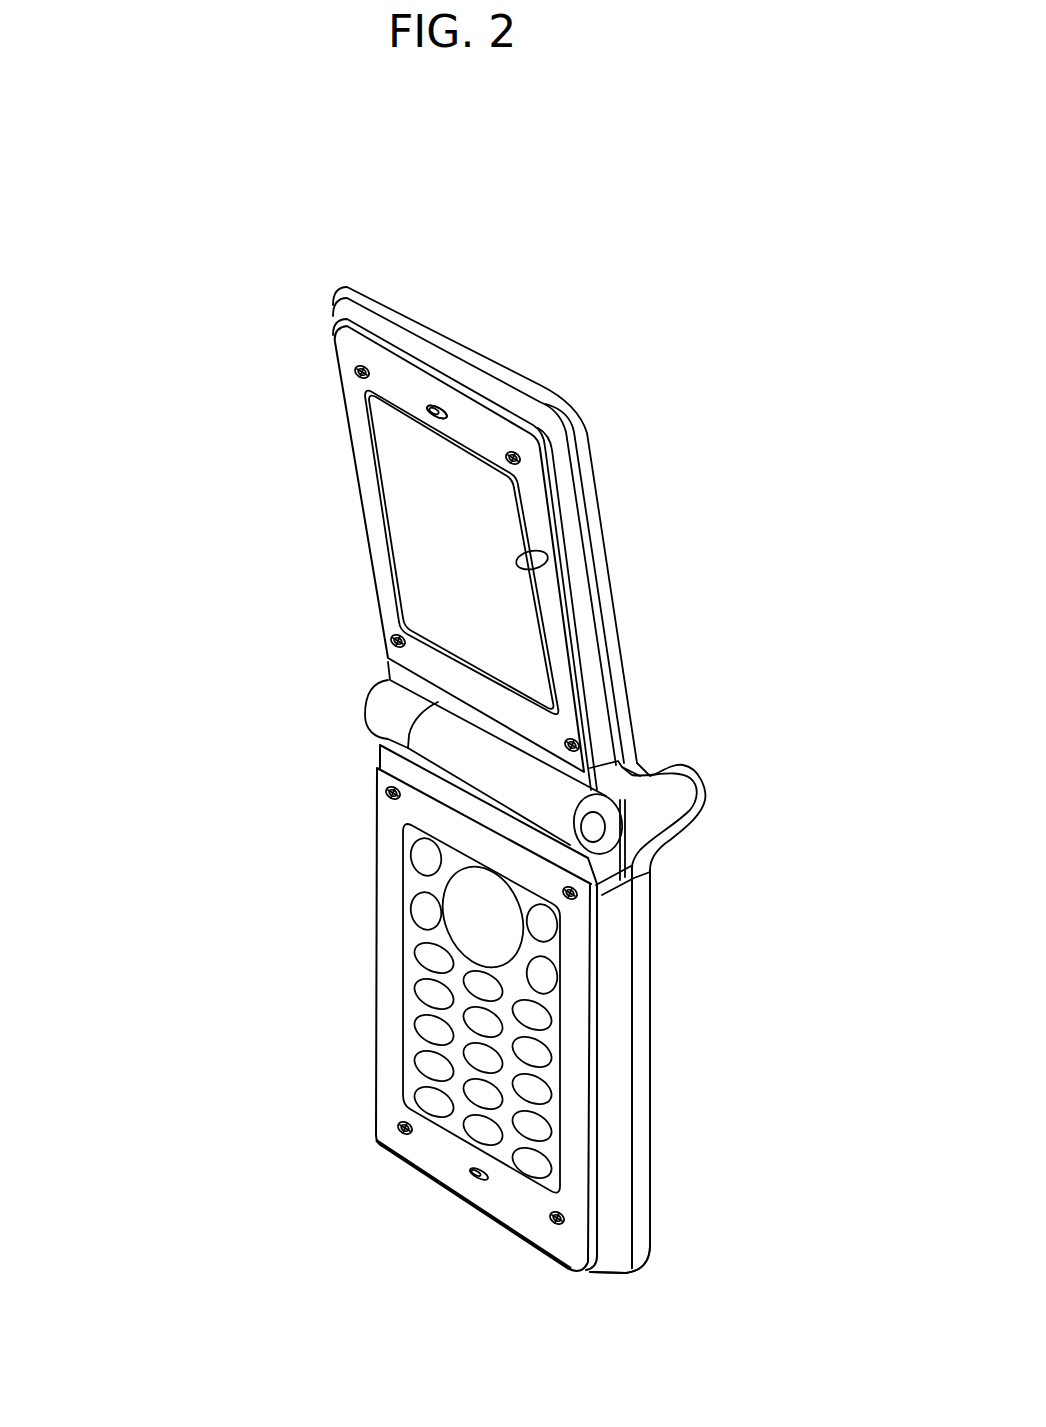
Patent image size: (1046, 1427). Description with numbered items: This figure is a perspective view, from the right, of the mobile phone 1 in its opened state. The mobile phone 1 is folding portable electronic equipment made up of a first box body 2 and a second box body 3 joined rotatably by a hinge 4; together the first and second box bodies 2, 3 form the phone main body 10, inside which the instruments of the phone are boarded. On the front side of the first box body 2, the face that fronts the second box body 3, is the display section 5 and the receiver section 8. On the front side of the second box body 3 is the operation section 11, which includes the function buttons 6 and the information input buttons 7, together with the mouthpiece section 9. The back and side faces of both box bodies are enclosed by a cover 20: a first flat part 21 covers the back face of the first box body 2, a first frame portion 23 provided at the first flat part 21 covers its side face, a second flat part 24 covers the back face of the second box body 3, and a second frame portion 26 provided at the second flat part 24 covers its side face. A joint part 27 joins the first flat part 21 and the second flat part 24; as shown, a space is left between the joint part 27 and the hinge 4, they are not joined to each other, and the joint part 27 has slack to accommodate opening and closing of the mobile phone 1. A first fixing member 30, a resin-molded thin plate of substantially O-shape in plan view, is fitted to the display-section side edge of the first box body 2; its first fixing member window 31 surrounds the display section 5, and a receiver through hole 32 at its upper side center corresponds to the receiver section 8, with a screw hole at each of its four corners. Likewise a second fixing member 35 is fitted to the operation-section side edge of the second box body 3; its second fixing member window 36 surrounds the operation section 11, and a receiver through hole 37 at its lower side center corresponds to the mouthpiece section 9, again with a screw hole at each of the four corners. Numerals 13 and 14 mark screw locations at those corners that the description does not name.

The mobile phone 1 is at (165, 226).
The first box body 2 is at (375, 669).
The second box body 3 is at (370, 754).
The hinge 4 is at (615, 810).
The display section 5 is at (402, 485).
The function buttons 6 is at (548, 977).
The information input buttons 7 is at (541, 1060).
The receiver section 8 is at (437, 408).
The receiver through hole 32 is at (437, 412).
The mouthpiece section 9 is at (478, 1182).
The phone main body 10 is at (292, 622).
The operation section 11 is at (555, 1091).
The screws 13 is at (516, 455).
The screws 14 is at (557, 1222).
The cover 20 is at (651, 724).
The first flat part 21 is at (583, 426).
The first frame portion 23 is at (571, 497).
The second flat part 24 is at (652, 1185).
The second frame portion 26 is at (617, 1227).
The joint part 27 is at (703, 778).
The first fixing member 30 is at (335, 411).
The first fixing member window 31 is at (548, 562).
The second fixing member 35 is at (370, 1059).
The second fixing member window 36 is at (560, 1130).
The receiver through hole 37 is at (472, 1180).